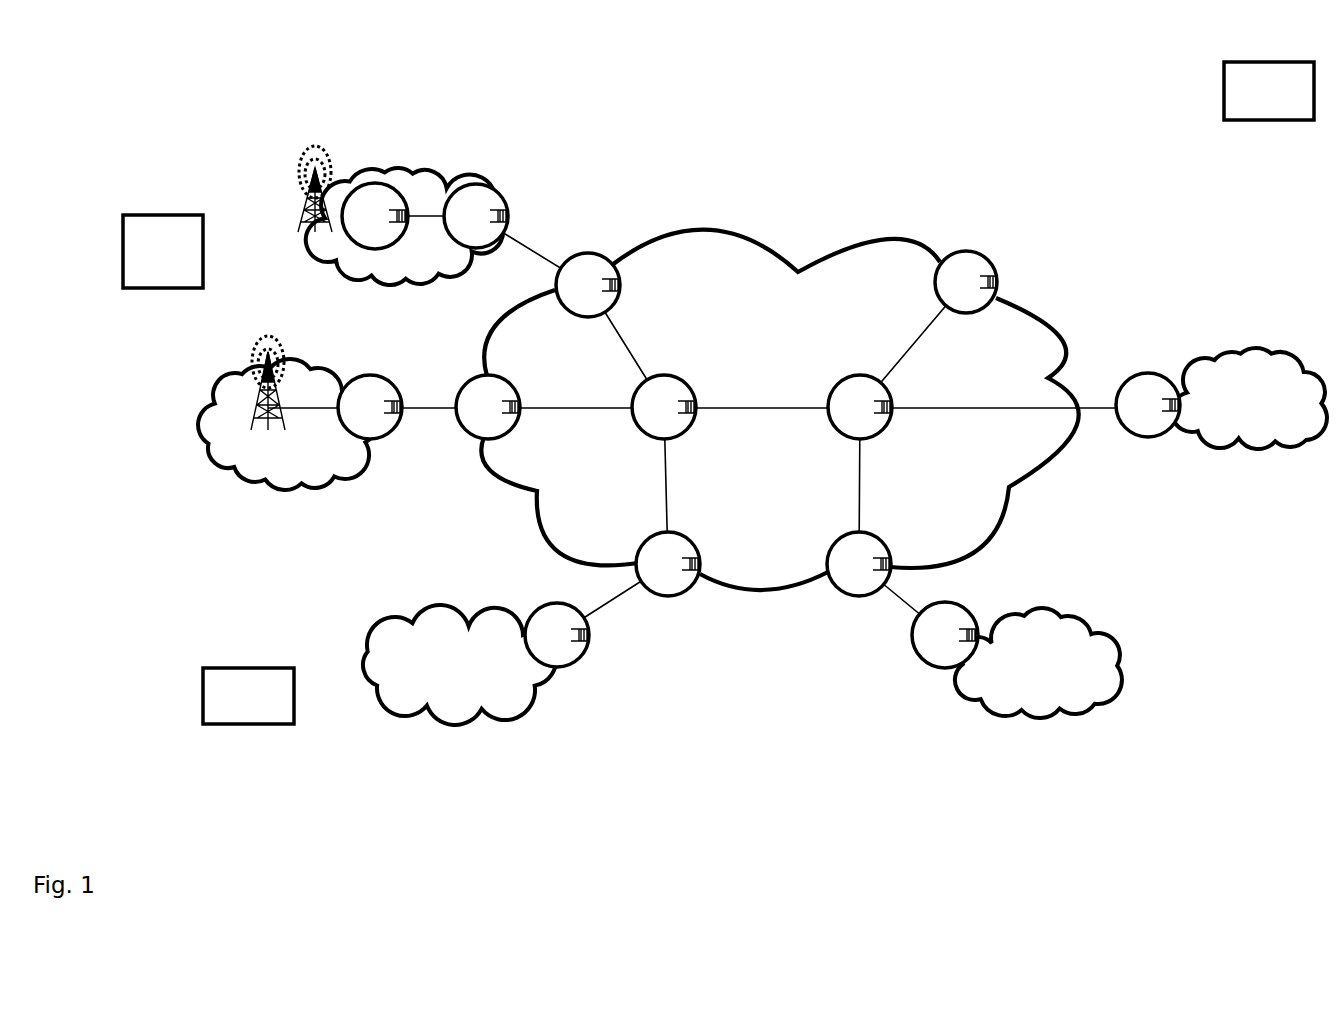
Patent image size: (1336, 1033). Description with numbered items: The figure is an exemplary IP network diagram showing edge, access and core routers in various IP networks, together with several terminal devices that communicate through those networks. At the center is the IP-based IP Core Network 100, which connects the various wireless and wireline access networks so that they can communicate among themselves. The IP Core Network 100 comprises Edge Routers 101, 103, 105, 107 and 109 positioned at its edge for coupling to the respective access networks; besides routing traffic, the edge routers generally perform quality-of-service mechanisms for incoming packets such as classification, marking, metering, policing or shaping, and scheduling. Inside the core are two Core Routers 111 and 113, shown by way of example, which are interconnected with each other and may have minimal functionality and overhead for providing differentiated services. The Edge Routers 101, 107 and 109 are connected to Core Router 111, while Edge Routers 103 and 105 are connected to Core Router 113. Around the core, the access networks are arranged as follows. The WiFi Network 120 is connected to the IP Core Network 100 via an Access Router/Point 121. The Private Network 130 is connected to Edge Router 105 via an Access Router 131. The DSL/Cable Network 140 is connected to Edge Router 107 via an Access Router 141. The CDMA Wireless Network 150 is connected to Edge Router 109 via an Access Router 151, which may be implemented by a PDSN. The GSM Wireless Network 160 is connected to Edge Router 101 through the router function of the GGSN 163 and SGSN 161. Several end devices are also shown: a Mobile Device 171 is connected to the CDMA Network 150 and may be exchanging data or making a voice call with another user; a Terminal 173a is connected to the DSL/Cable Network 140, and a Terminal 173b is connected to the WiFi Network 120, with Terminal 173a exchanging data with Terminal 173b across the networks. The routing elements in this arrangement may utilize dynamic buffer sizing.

The IP core network 100 is at (782, 248).
The edge router 101 is at (593, 253).
The edge router 103 is at (985, 251).
The edge router 105 is at (858, 597).
The edge router 107 is at (688, 594).
The edge router 109 is at (462, 440).
The core router 111 is at (688, 431).
The core router 113 is at (888, 428).
The WiFi network 120 is at (1278, 352).
The access router/point 121 is at (1140, 372).
The private network 130 is at (1122, 655).
The access router 131 is at (963, 608).
The DSL/Cable network 140 is at (407, 618).
The access router 141 is at (572, 662).
The CDMA wireless network 150 is at (233, 482).
The access router 151 is at (393, 440).
The GSM wireless network 160 is at (305, 205).
The SGSN 161 is at (376, 183).
The GGSN 163 is at (489, 184).
The mobile device 171 is at (208, 291).
The terminal 173a is at (372, 689).
The terminal 173b is at (1268, 123).